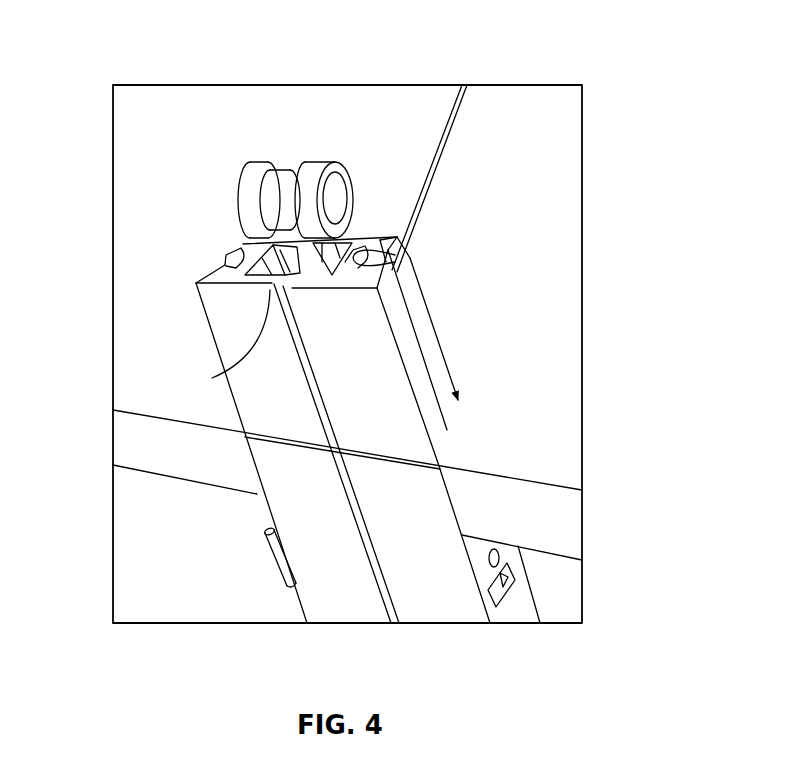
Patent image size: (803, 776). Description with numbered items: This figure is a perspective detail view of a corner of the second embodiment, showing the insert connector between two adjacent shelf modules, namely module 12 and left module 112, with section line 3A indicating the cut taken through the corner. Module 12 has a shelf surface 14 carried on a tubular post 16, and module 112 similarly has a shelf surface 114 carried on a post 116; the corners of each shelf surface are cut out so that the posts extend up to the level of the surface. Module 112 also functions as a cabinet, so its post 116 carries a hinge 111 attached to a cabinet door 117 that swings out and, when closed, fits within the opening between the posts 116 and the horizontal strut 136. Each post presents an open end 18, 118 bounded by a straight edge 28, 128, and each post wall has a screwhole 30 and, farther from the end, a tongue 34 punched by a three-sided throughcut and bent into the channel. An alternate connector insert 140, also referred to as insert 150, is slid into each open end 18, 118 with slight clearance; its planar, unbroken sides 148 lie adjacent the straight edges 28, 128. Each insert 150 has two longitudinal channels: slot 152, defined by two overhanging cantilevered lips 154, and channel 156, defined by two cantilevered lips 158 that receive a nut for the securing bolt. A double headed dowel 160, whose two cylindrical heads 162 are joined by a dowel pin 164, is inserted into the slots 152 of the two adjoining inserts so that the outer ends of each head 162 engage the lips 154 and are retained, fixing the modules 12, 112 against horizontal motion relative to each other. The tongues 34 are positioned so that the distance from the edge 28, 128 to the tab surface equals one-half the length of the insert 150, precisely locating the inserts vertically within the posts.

The module 12 is at (567, 565).
The shelf surface 14 is at (544, 168).
The post 16 is at (420, 583).
The open end 18 is at (448, 430).
The edge 28 is at (378, 456).
The screwhole 30 is at (505, 557).
The tongue 34 is at (497, 587).
The hinge 111 is at (268, 555).
The left module 112 is at (133, 472).
The shelf surface 114 is at (414, 163).
The post 116 is at (327, 573).
The cabinet door 117 is at (137, 592).
The open end 118 is at (133, 569).
The edge 128 is at (281, 440).
The horizontal strut 136 is at (137, 443).
The connector insert 140 is at (247, 335).
The side 148 is at (260, 380).
The connector insert 150 is at (340, 248).
The slot 152 is at (217, 342).
The cantilevered lip 154 is at (277, 290).
The channel 156 is at (398, 240).
The cantilevered lip 158 is at (397, 259).
The double headed dowel 160 is at (270, 156).
The head 162 is at (238, 195).
The dowel pin 164 is at (289, 176).
The section line 3A is at (232, 610).